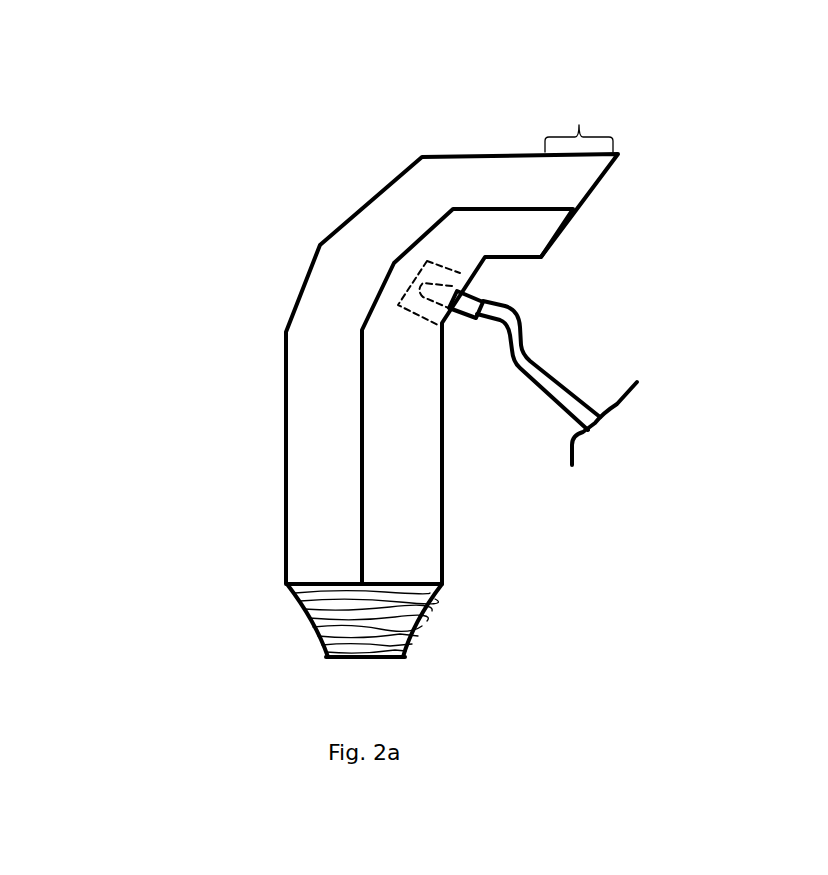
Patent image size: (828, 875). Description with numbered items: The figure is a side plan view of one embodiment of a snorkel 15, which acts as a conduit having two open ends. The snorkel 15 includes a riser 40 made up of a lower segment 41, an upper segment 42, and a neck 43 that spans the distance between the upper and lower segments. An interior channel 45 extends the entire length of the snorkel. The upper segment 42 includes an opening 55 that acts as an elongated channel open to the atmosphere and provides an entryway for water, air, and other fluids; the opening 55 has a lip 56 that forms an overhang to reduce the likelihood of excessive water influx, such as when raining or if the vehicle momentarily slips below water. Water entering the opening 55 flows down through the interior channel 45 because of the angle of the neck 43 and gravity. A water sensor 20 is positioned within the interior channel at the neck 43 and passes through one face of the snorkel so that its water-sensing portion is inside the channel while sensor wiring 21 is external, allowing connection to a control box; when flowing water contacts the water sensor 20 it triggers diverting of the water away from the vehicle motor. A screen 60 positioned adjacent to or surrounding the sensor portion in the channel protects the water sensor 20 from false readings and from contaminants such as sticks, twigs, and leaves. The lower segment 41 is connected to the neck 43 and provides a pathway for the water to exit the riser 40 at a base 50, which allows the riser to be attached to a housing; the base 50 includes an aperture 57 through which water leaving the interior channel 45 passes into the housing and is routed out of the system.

The snorkel 15 is at (124, 139).
The water sensor 20 is at (465, 305).
The sensor wiring 21 is at (535, 357).
The riser 40 is at (408, 407).
The lower segment 41 is at (253, 335).
The upper segment 42 is at (603, 105).
The neck 43 is at (403, 123).
The interior channel 45 is at (395, 493).
The base 50 is at (323, 627).
The opening 55 is at (588, 198).
The lip 56 is at (580, 125).
The aperture 57 is at (367, 658).
The screen 60 is at (455, 272).